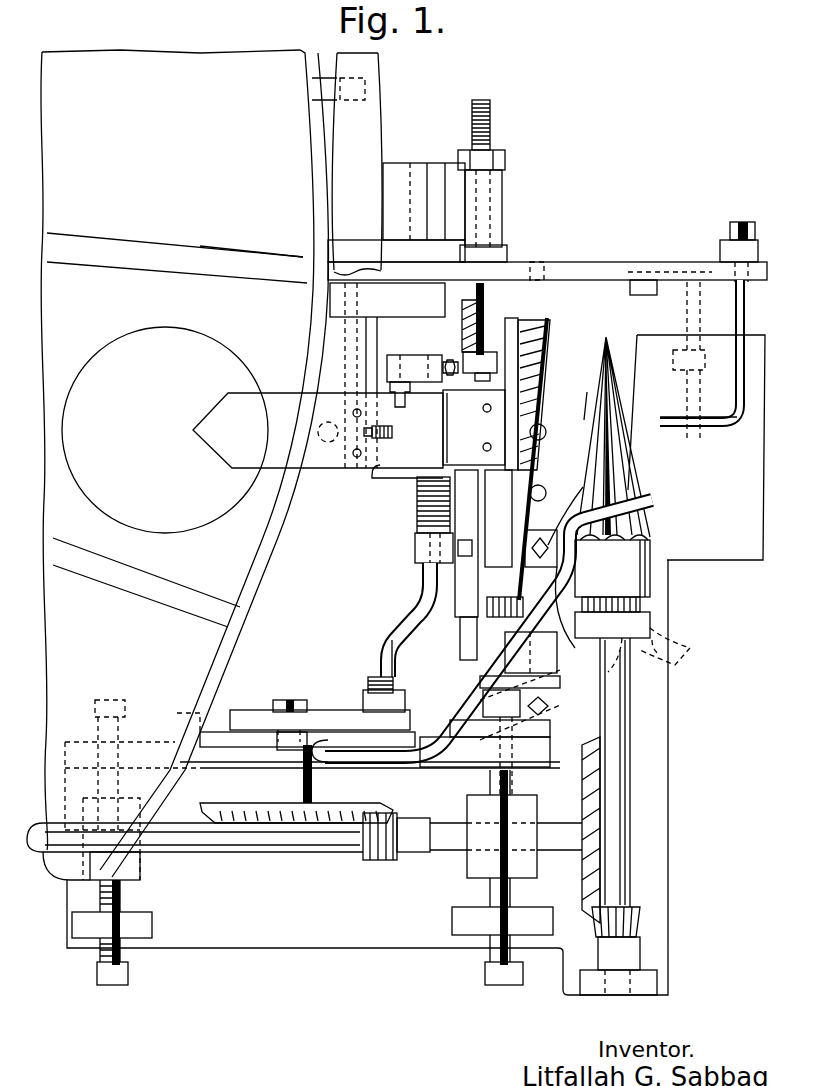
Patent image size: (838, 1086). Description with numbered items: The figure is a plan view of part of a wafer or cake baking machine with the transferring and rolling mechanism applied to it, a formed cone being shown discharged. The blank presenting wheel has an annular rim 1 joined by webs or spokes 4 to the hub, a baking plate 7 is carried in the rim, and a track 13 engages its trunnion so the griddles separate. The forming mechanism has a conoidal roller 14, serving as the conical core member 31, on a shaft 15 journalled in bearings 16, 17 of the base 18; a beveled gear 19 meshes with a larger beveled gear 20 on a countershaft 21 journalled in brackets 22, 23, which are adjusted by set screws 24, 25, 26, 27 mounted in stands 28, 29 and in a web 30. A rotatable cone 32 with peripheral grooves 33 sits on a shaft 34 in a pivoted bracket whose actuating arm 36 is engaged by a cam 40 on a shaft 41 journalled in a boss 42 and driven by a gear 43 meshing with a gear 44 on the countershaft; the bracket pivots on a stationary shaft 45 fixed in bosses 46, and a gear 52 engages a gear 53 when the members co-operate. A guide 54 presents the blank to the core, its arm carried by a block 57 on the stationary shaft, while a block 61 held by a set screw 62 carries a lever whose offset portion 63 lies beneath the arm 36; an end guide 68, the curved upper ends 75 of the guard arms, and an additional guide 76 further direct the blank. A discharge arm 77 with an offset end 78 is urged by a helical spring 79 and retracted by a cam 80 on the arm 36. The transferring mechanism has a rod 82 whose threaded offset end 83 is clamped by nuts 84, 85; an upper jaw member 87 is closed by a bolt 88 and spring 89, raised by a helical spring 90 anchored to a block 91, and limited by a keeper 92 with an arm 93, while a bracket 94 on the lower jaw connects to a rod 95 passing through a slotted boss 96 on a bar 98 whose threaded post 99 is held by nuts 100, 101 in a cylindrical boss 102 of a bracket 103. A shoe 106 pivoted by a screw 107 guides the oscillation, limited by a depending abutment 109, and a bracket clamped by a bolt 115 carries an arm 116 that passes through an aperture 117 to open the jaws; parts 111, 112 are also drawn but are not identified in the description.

The annular rim 1 is at (278, 512).
The webs or spokes 4 is at (131, 251).
The baking plate 7 is at (225, 257).
The track 13 is at (368, 122).
The conoidal roller 14 is at (650, 546).
The shaft 15 is at (618, 684).
The bearing 16 is at (650, 617).
The bearing 17 is at (650, 977).
The base or frame 18 is at (652, 772).
The beveled gear 19 is at (640, 913).
The beveled gear 20 is at (583, 888).
The countershaft 21 is at (458, 826).
The bracket 22 is at (530, 800).
The bracket 23 is at (140, 872).
The set screw 24 is at (128, 970).
The set screw 25 is at (113, 705).
The set screw 26 is at (515, 978).
The set screw 27 is at (507, 690).
The stand 28 is at (462, 916).
The stand 29 is at (140, 920).
The web 30 is at (150, 748).
The core member 31 is at (622, 470).
The rotatable cone 32 is at (535, 405).
The peripheral grooves 33 is at (538, 462).
The shaft 34 is at (514, 580).
The actuating arm 36 is at (430, 683).
The cam 40 is at (256, 715).
The shaft 41 is at (290, 702).
The boss 42 is at (285, 740).
The gear 43 is at (240, 806).
The gear 44 is at (375, 855).
The stationary shaft 45 is at (548, 683).
The bosses 46 is at (552, 706).
The gear 52 is at (647, 602).
The gear 53 is at (495, 600).
The guide 54 is at (732, 492).
The block 57 is at (590, 396).
The block 61 is at (566, 514).
The set screw 62 is at (548, 550).
The offset portion 63 is at (467, 632).
The end guide 68 is at (690, 276).
The upper ends 75 is at (542, 432).
The additional plate or guide 76 is at (497, 512).
The arm 77 is at (630, 718).
The offset end 78 is at (646, 515).
The helical spring 79 is at (315, 784).
The cam 80 is at (395, 694).
The rod 82 is at (424, 578).
The screw threaded offset end 83 is at (385, 665).
The nut 84 is at (378, 680).
The nut 85 is at (352, 745).
The upper jaw member 87 is at (325, 400).
The bolt 88 is at (390, 428).
The spring 89 is at (392, 437).
The helical spring 90 is at (418, 493).
The block 91 is at (413, 548).
The keeper 92 is at (416, 355).
The arm 93 is at (383, 382).
The bracket 94 is at (493, 367).
The rod 95 is at (465, 340).
The slotted boss 96 is at (485, 290).
The bar 98 is at (570, 270).
The screw threaded post 99 is at (486, 103).
The nut 100 is at (505, 165).
The nut 101 is at (507, 255).
The cylindrical boss 102 is at (468, 180).
The bracket 103 is at (433, 172).
The shoe 106 is at (426, 278).
The stud or screw 107 is at (546, 278).
The depending abutment 109 is at (642, 278).
The rod 111 is at (370, 349).
The rod 112 is at (357, 330).
The clamping bolt 115 is at (748, 282).
The arm 116 is at (677, 415).
The aperture 117 is at (325, 443).